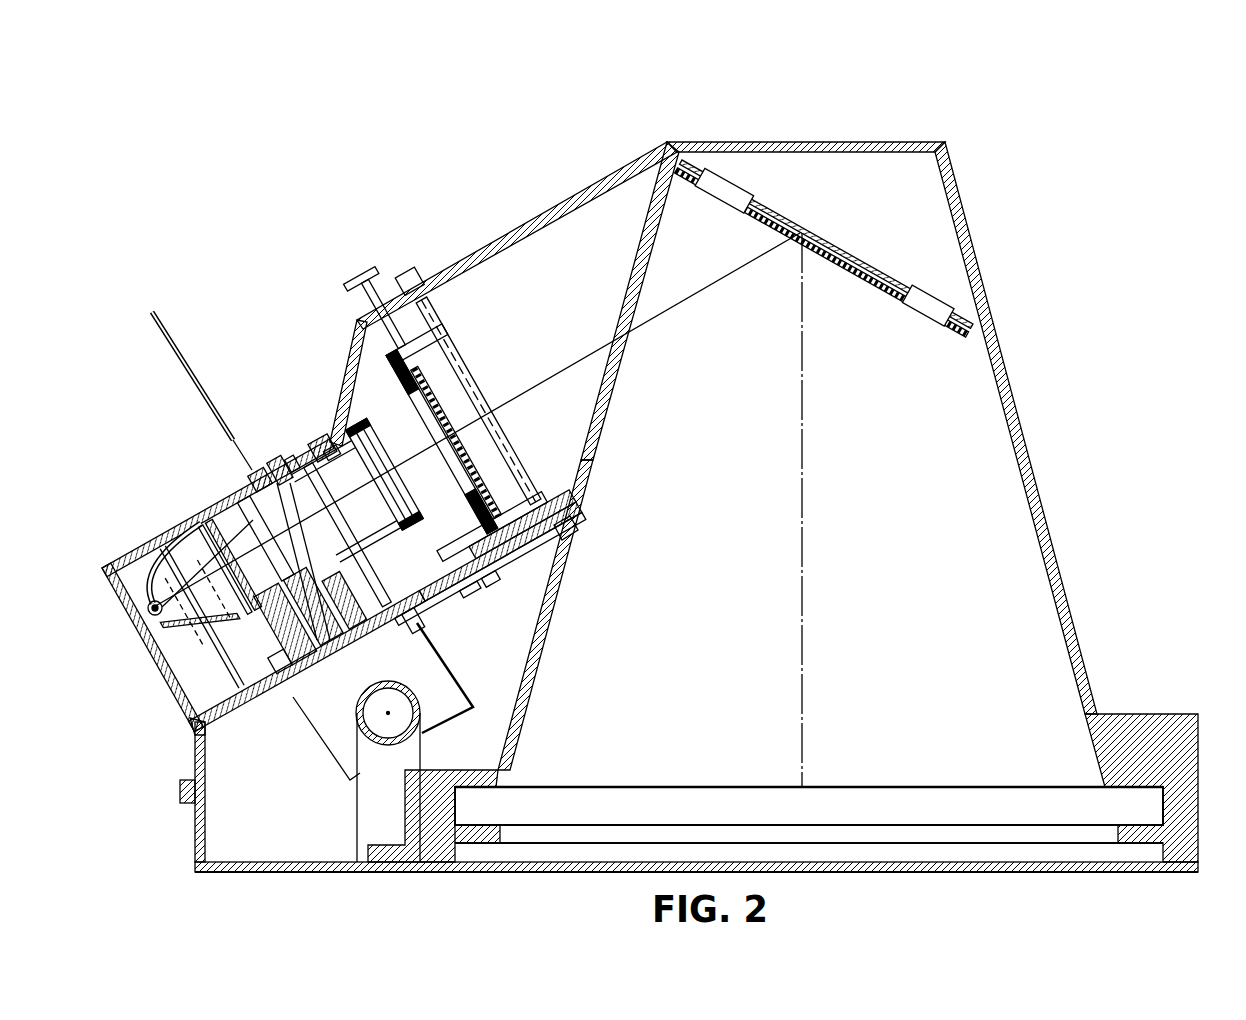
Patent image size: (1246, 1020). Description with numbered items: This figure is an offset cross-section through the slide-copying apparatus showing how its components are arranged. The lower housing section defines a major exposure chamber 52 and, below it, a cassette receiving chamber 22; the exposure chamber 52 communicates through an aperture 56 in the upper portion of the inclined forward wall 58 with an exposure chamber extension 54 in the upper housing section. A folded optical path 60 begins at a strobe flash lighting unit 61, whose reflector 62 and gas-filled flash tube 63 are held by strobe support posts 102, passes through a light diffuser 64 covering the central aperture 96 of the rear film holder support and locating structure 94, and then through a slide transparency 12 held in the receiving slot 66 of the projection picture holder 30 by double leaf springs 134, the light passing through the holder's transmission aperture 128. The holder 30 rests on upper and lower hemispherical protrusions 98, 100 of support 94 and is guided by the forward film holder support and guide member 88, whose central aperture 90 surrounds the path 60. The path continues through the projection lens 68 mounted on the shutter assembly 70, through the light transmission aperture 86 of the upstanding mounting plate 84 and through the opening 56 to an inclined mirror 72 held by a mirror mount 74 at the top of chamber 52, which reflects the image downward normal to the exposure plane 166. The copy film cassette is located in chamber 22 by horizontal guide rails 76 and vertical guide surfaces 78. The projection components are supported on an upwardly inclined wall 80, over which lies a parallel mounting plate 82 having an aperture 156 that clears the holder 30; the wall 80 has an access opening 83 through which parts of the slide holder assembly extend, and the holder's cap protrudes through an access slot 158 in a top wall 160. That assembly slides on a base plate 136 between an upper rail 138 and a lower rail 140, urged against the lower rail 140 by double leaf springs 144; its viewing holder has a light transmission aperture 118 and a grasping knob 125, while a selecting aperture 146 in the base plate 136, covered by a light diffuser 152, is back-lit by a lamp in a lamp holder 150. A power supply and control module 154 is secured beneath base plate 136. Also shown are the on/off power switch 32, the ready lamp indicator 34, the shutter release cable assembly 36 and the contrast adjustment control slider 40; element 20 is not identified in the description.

The slide transparency 12 is at (165, 333).
The document platen 20 is at (452, 804).
The cassette receiving chamber 22 is at (985, 811).
The projection picture holder 30 is at (274, 470).
The on/off power switch 32 is at (182, 782).
The ready lamp indicator 34 is at (333, 383).
The shutter release cable assembly 36 is at (368, 272).
The contrast adjustment control slider 40 is at (408, 272).
The exposure chamber 52 is at (205, 724).
The exposure chamber extension 54 is at (552, 242).
The aperture 56 is at (620, 300).
The inclined forward wall 58 is at (556, 574).
The folded optical path 60 is at (743, 272).
The strobe flash lighting unit 61 is at (98, 572).
The reflector 62 is at (125, 570).
The gas-filled flash tube 63 is at (162, 612).
The light diffuser 64 is at (225, 550).
The receiving slot 66 is at (250, 484).
The projection lens 68 is at (407, 507).
The shutter assembly 70 is at (412, 380).
The inclined mirror 72 is at (846, 270).
The mirror mount 74 is at (757, 181).
The guide rails 76 is at (482, 845).
The guide surfaces 78 is at (470, 795).
The inclined wall 80 is at (560, 536).
The mounting plate 82 is at (485, 550).
The access opening 83 is at (428, 583).
The upstanding mounting plate 84 is at (436, 330).
The light transmission aperture 86 is at (470, 416).
The forward film holder support and guide member 88 is at (322, 450).
The central light transmission aperture 90 is at (322, 448).
The rear film holder support and locating structure 94 is at (222, 505).
The central aperture 96 is at (240, 605).
The upper hemispherical protrusions 98 is at (240, 503).
The lower hemispherical protrusions 100 is at (307, 661).
The strobe support posts 102 is at (232, 662).
The light transmission aperture 118 is at (362, 592).
The grasping knob 125 is at (257, 682).
The light transmission aperture 128 is at (310, 560).
The double leaf springs 134 is at (286, 527).
The base plate 136 is at (447, 598).
The upper rail 138 is at (493, 576).
The lower rail 140 is at (238, 728).
The double leaf springs 144 is at (478, 586).
The selecting aperture 146 is at (370, 640).
The lamp holder 150 is at (405, 687).
The light diffuser 152 is at (411, 678).
The power supply and control module 154 is at (350, 777).
The aperture 156 is at (355, 585).
The access slot 158 is at (282, 464).
The top wall 160 is at (185, 530).
The exposure plane 166 is at (882, 787).